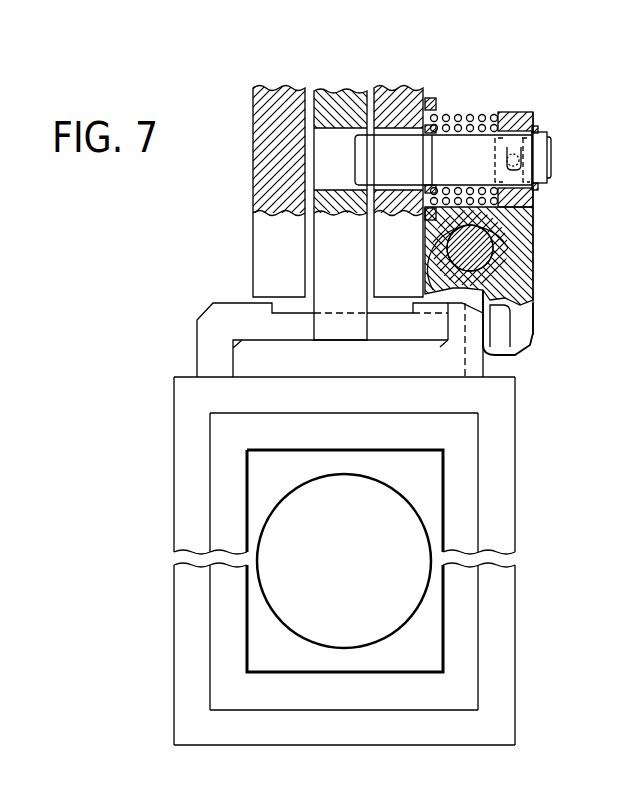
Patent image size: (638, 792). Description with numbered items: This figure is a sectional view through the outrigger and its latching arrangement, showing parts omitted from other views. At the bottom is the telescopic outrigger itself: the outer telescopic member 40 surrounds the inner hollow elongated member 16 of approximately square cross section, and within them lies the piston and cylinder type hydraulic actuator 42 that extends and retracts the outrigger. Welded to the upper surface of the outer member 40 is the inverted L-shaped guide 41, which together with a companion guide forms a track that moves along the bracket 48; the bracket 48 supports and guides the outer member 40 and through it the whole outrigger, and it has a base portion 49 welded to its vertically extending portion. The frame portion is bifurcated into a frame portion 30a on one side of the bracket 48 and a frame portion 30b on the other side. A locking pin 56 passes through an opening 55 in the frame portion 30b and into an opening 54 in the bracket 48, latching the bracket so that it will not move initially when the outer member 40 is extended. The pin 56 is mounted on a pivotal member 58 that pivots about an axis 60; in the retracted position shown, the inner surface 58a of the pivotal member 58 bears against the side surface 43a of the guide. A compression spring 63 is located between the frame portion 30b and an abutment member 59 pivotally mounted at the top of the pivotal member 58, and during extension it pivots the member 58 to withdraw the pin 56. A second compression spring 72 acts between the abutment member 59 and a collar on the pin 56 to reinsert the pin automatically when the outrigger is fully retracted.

The frame portion 30a is at (268, 89).
The bracket 48 is at (337, 91).
The frame portion 30b is at (396, 89).
The opening 54 is at (342, 190).
The opening 55 is at (402, 190).
The locking pin 56 is at (408, 169).
The compression spring 72 is at (463, 119).
The compression spring 63 is at (482, 116).
The abutment member 59 is at (523, 111).
The pivotal member 58 is at (503, 232).
The axis 60 is at (470, 249).
The inner surface 58a is at (483, 328).
The side surface 43a is at (490, 352).
The guide 41 is at (205, 318).
The base portion 49 is at (250, 360).
The outer telescopic member 40 is at (187, 468).
The inner hollow elongated member 16 is at (462, 495).
The hydraulic actuator 42 is at (368, 500).